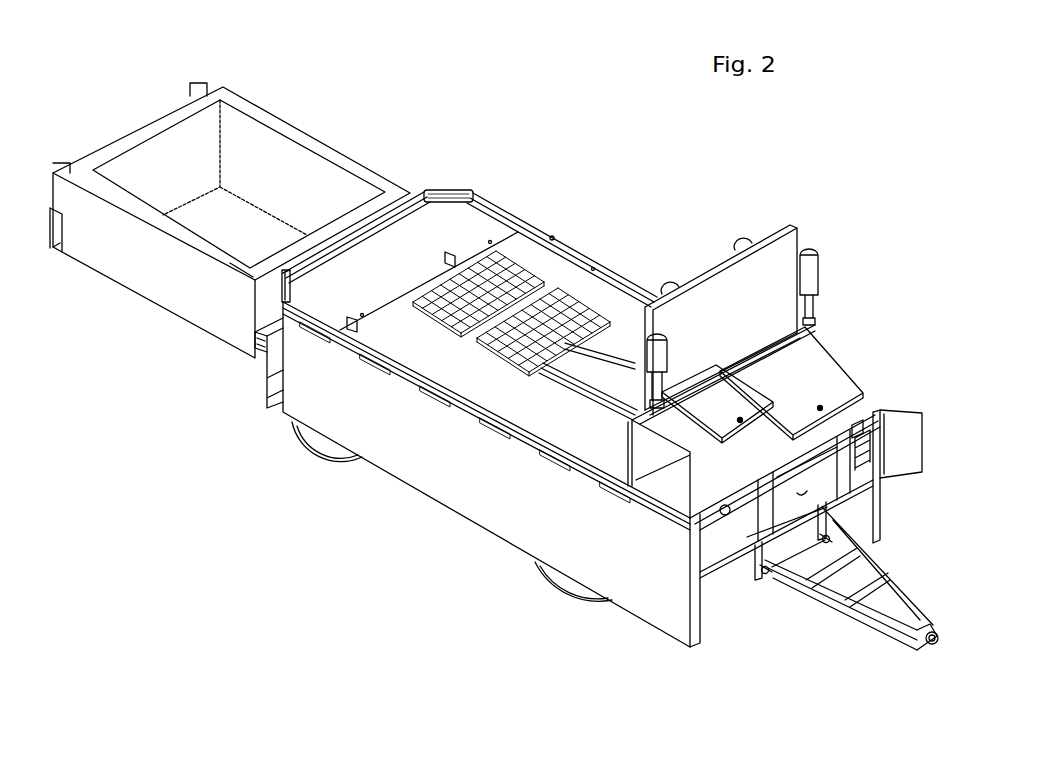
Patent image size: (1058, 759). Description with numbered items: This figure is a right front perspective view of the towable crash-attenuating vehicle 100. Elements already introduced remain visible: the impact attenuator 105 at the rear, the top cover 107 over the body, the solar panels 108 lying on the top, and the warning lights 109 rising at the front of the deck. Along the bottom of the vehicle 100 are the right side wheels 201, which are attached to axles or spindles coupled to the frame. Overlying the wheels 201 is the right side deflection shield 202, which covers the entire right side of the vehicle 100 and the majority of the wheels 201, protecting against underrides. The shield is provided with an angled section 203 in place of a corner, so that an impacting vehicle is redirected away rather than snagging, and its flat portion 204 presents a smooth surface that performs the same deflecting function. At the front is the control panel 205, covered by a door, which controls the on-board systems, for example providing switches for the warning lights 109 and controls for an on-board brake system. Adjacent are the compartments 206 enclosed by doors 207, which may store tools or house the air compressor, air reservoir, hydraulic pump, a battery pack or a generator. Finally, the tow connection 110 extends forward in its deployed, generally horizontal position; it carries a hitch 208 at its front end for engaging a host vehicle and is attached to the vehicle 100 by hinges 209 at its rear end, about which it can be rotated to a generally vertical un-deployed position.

The towable crash-attenuating vehicle 100 is at (458, 97).
The impact attenuator 105 is at (163, 132).
The top cover 107 is at (432, 228).
The solar panels 108 is at (562, 330).
The warning lights 109 is at (775, 255).
The tow connection 110 is at (837, 603).
The right side wheels 201 is at (345, 455).
The right side deflection shield 202 is at (612, 563).
The angled section 203 is at (277, 302).
The flat portion 204 is at (653, 585).
The control panel 205 is at (878, 473).
The compartments 206 is at (853, 430).
The doors 207 is at (708, 403).
The hitch 208 is at (935, 650).
The hinges 209 is at (827, 540).